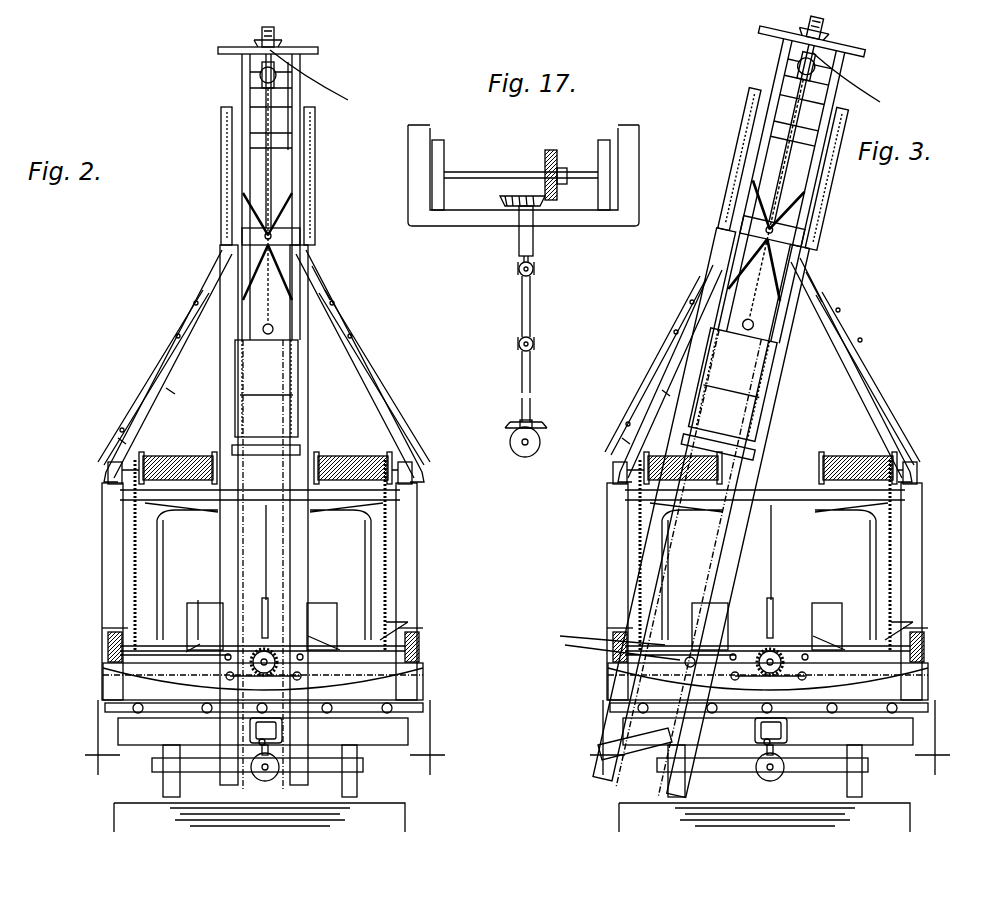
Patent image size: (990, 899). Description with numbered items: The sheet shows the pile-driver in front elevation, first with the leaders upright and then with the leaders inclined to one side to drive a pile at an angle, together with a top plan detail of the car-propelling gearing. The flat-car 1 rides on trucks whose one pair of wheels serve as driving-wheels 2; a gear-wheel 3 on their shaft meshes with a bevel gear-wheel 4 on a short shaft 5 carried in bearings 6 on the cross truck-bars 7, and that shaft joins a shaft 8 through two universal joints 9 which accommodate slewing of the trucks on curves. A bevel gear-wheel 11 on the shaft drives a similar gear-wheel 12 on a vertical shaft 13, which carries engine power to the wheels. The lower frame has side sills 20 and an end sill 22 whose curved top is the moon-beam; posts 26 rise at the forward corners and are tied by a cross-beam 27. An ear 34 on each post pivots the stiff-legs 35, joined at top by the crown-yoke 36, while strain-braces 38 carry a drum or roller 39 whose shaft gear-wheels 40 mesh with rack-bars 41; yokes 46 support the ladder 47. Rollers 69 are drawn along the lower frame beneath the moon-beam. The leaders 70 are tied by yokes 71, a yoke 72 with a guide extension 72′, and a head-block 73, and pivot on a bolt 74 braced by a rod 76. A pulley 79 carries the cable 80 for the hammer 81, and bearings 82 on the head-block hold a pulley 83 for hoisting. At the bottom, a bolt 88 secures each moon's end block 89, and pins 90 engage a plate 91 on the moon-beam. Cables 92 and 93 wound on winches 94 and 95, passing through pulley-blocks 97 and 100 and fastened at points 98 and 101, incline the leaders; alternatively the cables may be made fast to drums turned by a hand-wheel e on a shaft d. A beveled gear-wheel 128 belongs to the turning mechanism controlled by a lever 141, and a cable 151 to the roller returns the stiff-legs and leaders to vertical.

In FIG. 2, the flat-car 1 is at (259, 788).
In FIG. 3, the flat-car 1 is at (764, 788).
In FIG. 17, the driving-wheels 2 is at (442, 158).
In FIG. 17, the gear-wheel 3 is at (552, 150).
In FIG. 17, the bevel gear-wheel 4 is at (502, 198).
In FIG. 17, the short shaft 5 is at (532, 268).
In FIG. 17, the bearings 6 is at (524, 214).
In FIG. 17, the cross truck-bars 7 is at (412, 212).
In FIG. 2, the shaft 8 is at (268, 742).
In FIG. 17, the shaft 8 is at (532, 380).
In FIG. 3, the shaft 8 is at (760, 772).
In FIG. 17, the universal joints 9 is at (535, 275).
In FIG. 2, the bevel gear-wheel 11 is at (267, 776).
In FIG. 17, the bevel gear-wheel 11 is at (532, 426).
In FIG. 3, the bevel gear-wheel 11 is at (786, 775).
In FIG. 2, the bevel gear-wheel 12 is at (254, 758).
In FIG. 17, the bevel gear-wheel 12 is at (526, 457).
In FIG. 3, the bevel gear-wheel 12 is at (788, 753).
In FIG. 17, the vertical shaft 13 is at (545, 432).
In FIG. 2, the side sills 20 is at (104, 680).
In FIG. 3, the side sills 20 is at (770, 691).
In FIG. 2, the end sill (moon-beam) 22 is at (390, 704).
In FIG. 3, the end sill (moon-beam) 22 is at (790, 689).
In FIG. 2, the posts 26 is at (102, 535).
In FIG. 3, the posts 26 is at (775, 591).
In FIG. 2, the cross-beam 27 is at (276, 502).
In FIG. 3, the cross-beam 27 is at (769, 571).
In FIG. 2, the ear 34 is at (108, 476).
In FIG. 3, the ear 34 is at (777, 478).
In FIG. 2, the stiff-legs 35 is at (165, 385).
In FIG. 3, the stiff-legs 35 is at (655, 418).
In FIG. 2, the crown-yoke 36 is at (318, 285).
In FIG. 3, the crown-yoke 36 is at (822, 292).
In FIG. 2, the strain-braces 38 is at (235, 450).
In FIG. 3, the strain-braces 38 is at (648, 438).
In FIG. 2, the drum or roller 39 is at (328, 482).
In FIG. 3, the drum or roller 39 is at (765, 472).
In FIG. 2, the gear-wheel 40 is at (395, 472).
In FIG. 3, the gear-wheel 40 is at (781, 483).
In FIG. 2, the rack-bar 41 is at (132, 575).
In FIG. 3, the rack-bar 41 is at (775, 555).
In FIG. 2, the yokes 46 is at (195, 308).
In FIG. 3, the yokes 46 is at (700, 318).
In FIG. 2, the ladder 47 is at (170, 352).
In FIG. 3, the ladder 47 is at (690, 354).
In FIG. 2, the roller 69 is at (140, 712).
In FIG. 3, the roller 69 is at (767, 719).
In FIG. 2, the leaders 70 is at (222, 538).
In FIG. 3, the leaders 70 is at (788, 428).
In FIG. 2, the yokes 71 is at (290, 98).
In FIG. 3, the yokes 71 is at (692, 649).
In FIG. 2, the yoke 72 is at (295, 232).
In FIG. 3, the yoke 72 is at (790, 240).
In FIG. 2, the extension (guide) 72′ is at (222, 160).
In FIG. 3, the extension (guide) 72′ is at (742, 140).
In FIG. 2, the head-block 73 is at (318, 52).
In FIG. 3, the head-block 73 is at (858, 60).
In FIG. 2, the bolt 74 is at (276, 232).
In FIG. 3, the bolt 74 is at (775, 228).
In FIG. 2, the rod 76 is at (285, 210).
In FIG. 3, the rod 76 is at (770, 205).
In FIG. 2, the pulley 79 is at (262, 70).
In FIG. 3, the pulley 79 is at (800, 70).
In FIG. 2, the cable or line 80 is at (268, 118).
In FIG. 3, the cable or line 80 is at (790, 108).
In FIG. 2, the hammer or monkey 81 is at (266, 271).
In FIG. 3, the hammer or monkey 81 is at (759, 265).
In FIG. 2, the bearings 82 is at (274, 52).
In FIG. 3, the bearings 82 is at (800, 38).
In FIG. 2, the pulley 83 is at (262, 38).
In FIG. 3, the pulley 83 is at (824, 37).
In FIG. 2, the bolt 88 is at (266, 671).
In FIG. 3, the bolt 88 is at (668, 666).
In FIG. 2, the moon's end block 89 is at (180, 656).
In FIG. 3, the moon's end block 89 is at (650, 658).
In FIG. 2, the pins 90 is at (230, 654).
In FIG. 3, the pins 90 is at (720, 621).
In FIG. 2, the plate 91 is at (222, 678).
In FIG. 3, the plate 91 is at (786, 654).
In FIG. 2, the cable or line 92 is at (340, 650).
In FIG. 3, the cable or line 92 is at (844, 614).
In FIG. 2, the cable or line 93 is at (332, 636).
In FIG. 3, the cable or line 93 is at (758, 658).
In FIG. 2, the winch or windlass 94 is at (410, 630).
In FIG. 3, the winch or windlass 94 is at (928, 623).
In FIG. 2, the winch or windlass 95 is at (200, 622).
In FIG. 2, the pulley-block 97 is at (205, 626).
In FIG. 3, the pulley-block 97 is at (644, 626).
In FIG. 2, the fastening point 98 is at (421, 648).
In FIG. 3, the fastening point 98 is at (936, 645).
In FIG. 2, the pulley-block 100 is at (262, 668).
In FIG. 3, the pulley-block 100 is at (767, 668).
In FIG. 2, the fastening point 101 is at (108, 644).
In FIG. 3, the fastening point 101 is at (599, 662).
In FIG. 3, the beveled gear-wheel 128 is at (783, 646).
In FIG. 2, the lever 141 is at (270, 610).
In FIG. 3, the lever 141 is at (796, 609).
In FIG. 2, the cable 151 is at (268, 558).
In FIG. 3, the cable 151 is at (798, 552).
In FIG. 2, the shaft d is at (118, 735).
In FIG. 3, the shaft d is at (787, 731).
In FIG. 2, the hand-wheel e is at (100, 758).
In FIG. 3, the hand-wheel e is at (770, 745).